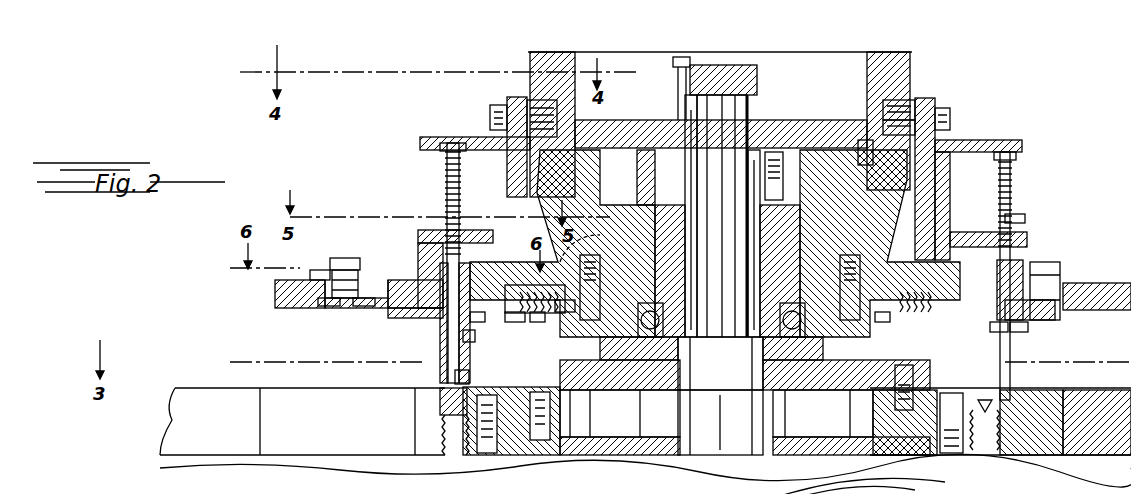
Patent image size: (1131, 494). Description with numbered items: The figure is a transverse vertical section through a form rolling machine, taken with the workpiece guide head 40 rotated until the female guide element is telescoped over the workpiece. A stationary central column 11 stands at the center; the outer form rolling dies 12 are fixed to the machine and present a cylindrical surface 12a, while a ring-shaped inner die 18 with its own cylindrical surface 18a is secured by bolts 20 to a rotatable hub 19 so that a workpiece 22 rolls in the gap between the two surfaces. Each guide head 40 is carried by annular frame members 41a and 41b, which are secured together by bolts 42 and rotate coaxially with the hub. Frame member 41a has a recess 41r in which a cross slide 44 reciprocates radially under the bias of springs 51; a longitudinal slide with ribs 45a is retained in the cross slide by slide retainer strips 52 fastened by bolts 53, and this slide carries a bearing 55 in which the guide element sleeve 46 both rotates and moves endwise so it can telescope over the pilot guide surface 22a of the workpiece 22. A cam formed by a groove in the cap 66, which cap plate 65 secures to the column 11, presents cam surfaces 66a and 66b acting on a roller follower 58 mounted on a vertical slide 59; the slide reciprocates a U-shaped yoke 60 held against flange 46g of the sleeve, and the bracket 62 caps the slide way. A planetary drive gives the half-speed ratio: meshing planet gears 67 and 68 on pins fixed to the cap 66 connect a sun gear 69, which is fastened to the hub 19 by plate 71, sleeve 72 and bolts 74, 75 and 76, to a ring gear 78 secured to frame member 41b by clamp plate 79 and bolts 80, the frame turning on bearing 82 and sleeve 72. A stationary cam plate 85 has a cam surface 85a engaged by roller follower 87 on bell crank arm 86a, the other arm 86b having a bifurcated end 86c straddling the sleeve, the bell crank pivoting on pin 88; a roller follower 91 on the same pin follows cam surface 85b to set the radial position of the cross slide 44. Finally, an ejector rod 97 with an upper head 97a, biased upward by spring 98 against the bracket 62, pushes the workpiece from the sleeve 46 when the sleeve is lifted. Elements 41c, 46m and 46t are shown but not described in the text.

The central column 11 is at (720, 275).
The form rolling dies 12 is at (420, 388).
The cylindrical surface of outer die 12a is at (455, 456).
The ring-shaped die 18 is at (532, 456).
The cylindrical surface of inner die 18a is at (462, 432).
The hub 19 is at (625, 456).
The bolts 20 is at (950, 394).
The workpiece 22 is at (440, 400).
The cylindrical peripheral guide surface 22a is at (448, 349).
The workpiece guide heads 40 is at (380, 325).
The annular frame member 41a is at (588, 322).
The annular frame member 41b is at (562, 243).
The clamp pin 41c is at (882, 322).
The recess 41r is at (538, 322).
The bolts 42 is at (565, 312).
The cross slide 44 is at (1055, 340).
The longitudinal slide ribs 45a is at (400, 320).
The workpiece guide element sleeve 46 is at (468, 366).
The flange 46g is at (1015, 228).
The tie rod nut 46m is at (470, 376).
The tie rod plate 46t is at (1020, 240).
The springs 51 is at (900, 320).
The slide retainer strips 52 is at (1006, 338).
The bolts 53 is at (484, 322).
The bearing 55 is at (476, 340).
The roller follower 58 is at (547, 116).
The vertical slide 59 is at (936, 99).
The U-shaped yoke 60 is at (942, 250).
The bracket 62 is at (985, 140).
The cap plate 65 is at (715, 66).
The cap 66 is at (790, 118).
The cam surface 66a is at (897, 100).
The cam surface 66b is at (883, 127).
The planet gear 67 is at (650, 175).
The planet gear 68 is at (820, 222).
The sun gear 69 is at (775, 178).
The plate 71 is at (835, 366).
The sleeve 72 is at (753, 270).
The bolt 74 is at (808, 322).
The bolt 75 is at (903, 366).
The bolt 76 is at (743, 152).
The ring gear 78 is at (893, 198).
The clamp plate 79 is at (873, 143).
The bolts 80 is at (556, 148).
The bearing 82 is at (630, 335).
The cam plate 85 is at (278, 294).
The cam surface 85a is at (320, 278).
The cam surface 85b is at (1078, 285).
The bell crank arm 86a is at (370, 258).
The bell crank arm 86b is at (425, 258).
The bifurcated end 86c is at (1022, 262).
The roller follower 87 is at (322, 306).
The pivot pin 88 is at (360, 306).
The roller follower 91 is at (1060, 310).
The ejector rod 97 is at (1010, 179).
The upper head 97a is at (1005, 160).
The spring 98 is at (1010, 192).